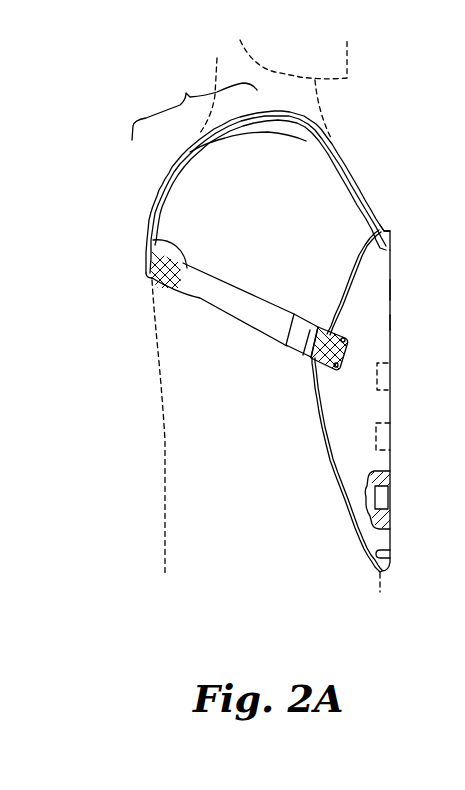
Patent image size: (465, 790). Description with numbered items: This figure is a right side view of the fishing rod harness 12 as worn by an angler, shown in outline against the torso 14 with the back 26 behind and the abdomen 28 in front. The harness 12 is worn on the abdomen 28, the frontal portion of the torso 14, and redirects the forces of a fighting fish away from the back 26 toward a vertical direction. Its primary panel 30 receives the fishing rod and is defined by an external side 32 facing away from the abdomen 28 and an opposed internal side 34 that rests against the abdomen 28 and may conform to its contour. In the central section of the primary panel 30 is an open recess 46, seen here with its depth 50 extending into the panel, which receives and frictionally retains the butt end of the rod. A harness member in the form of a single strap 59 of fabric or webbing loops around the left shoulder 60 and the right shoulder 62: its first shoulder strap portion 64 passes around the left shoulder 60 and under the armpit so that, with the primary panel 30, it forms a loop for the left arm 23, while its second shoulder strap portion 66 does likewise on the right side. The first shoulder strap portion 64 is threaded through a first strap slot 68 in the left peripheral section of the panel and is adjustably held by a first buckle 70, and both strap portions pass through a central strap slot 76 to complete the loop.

The fishing rod harness 12 is at (400, 225).
The torso 14 is at (271, 458).
The left arm 23 is at (207, 192).
The back 26 is at (158, 368).
The abdomen 28 is at (336, 233).
The primary panel 30 is at (391, 288).
The external side 32 is at (401, 322).
The internal side 34 is at (330, 297).
The open recess 46 is at (382, 494).
The depth 50 is at (390, 507).
The strap 59 is at (203, 297).
The left shoulder 60 is at (194, 101).
The right shoulder 62 is at (194, 101).
The first shoulder strap portion 64 is at (333, 147).
The second shoulder strap portion 66 is at (150, 237).
The first strap slot 68 is at (346, 347).
The first buckle 70 is at (295, 343).
The central strap slot 76 is at (386, 255).